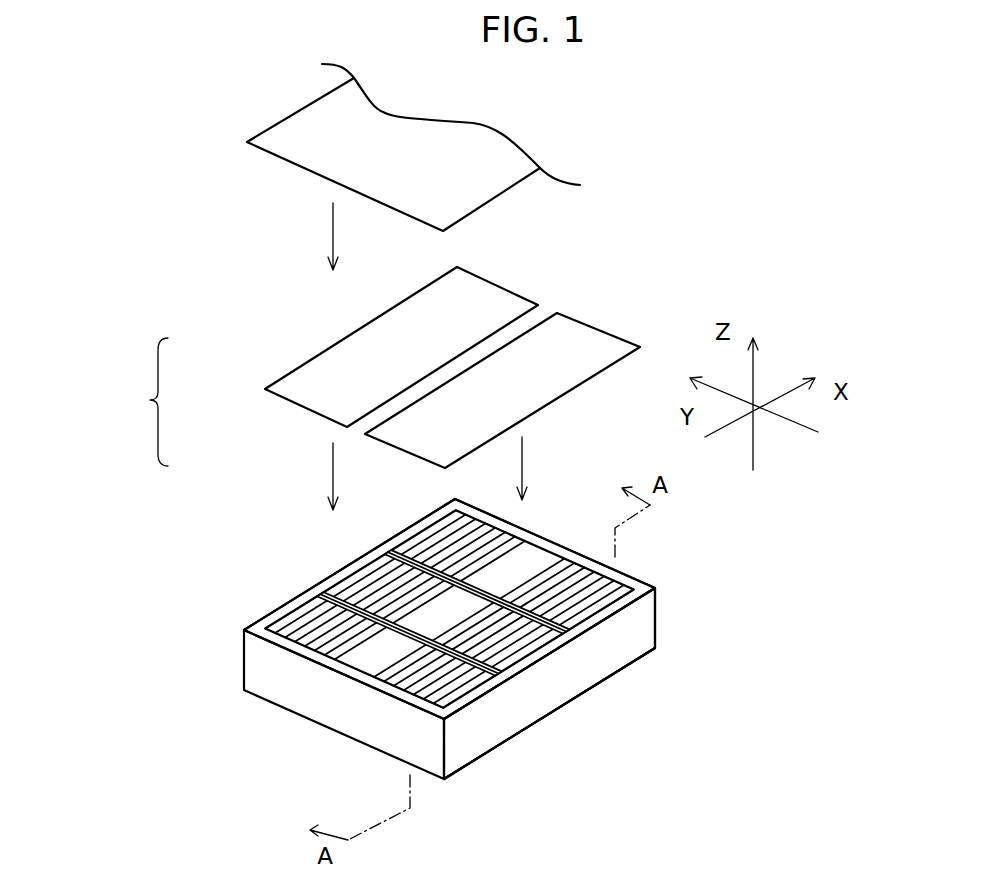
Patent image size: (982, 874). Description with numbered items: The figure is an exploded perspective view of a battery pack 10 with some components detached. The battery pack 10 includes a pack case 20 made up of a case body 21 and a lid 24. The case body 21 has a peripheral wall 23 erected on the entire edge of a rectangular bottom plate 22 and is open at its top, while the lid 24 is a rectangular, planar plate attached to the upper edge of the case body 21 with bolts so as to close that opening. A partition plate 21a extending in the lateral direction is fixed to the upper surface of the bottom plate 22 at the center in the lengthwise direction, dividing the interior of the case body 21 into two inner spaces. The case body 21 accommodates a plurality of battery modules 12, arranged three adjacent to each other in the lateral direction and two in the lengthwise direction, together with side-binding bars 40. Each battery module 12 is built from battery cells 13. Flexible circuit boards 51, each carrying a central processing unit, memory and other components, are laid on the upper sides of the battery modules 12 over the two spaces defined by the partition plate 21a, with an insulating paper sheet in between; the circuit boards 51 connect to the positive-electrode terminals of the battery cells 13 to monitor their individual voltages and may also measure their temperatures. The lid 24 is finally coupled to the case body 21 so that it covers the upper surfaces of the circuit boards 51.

The battery pack 10 is at (143, 402).
The battery module 12 is at (358, 576).
The battery cell 13 is at (416, 574).
The pack case 20 is at (293, 586).
The case body 21 is at (622, 640).
The partition plate 21a is at (362, 665).
The bottom plate 22 is at (513, 737).
The peripheral wall 23 is at (480, 727).
The lid 24 is at (465, 145).
The side-binding bar 40 is at (400, 543).
The circuit board 51 is at (590, 323).